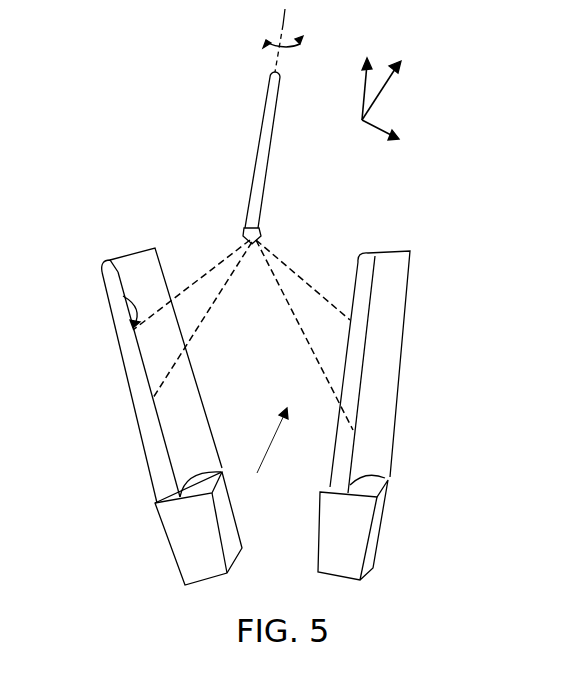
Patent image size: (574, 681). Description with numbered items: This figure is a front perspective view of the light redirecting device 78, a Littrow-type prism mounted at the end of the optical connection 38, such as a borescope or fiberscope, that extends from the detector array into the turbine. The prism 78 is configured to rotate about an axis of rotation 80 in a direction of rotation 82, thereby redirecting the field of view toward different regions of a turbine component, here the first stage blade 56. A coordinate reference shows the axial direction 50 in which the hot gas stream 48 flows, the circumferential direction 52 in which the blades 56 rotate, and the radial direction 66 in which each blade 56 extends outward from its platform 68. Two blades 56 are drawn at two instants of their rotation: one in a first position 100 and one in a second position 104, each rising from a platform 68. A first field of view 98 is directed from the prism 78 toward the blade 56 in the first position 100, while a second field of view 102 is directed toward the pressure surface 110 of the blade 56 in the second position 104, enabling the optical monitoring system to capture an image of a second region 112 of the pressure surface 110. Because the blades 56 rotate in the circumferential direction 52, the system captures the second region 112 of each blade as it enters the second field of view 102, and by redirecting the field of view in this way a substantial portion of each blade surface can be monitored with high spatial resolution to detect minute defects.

The optical connection 38 is at (273, 153).
The hot gas stream 48 is at (272, 438).
The axial direction 50 is at (398, 100).
The circumferential direction 52 is at (366, 130).
The first stage blade 56 is at (162, 452).
The radial direction 66 is at (362, 92).
The platform 68 is at (327, 485).
The light redirecting device 78 is at (262, 228).
The axis of rotation 80 is at (285, 22).
The direction of rotation 82 is at (298, 60).
The first field of view 98 is at (300, 337).
The first position 100 is at (376, 233).
The second field of view 102 is at (200, 270).
The second position 104 is at (132, 329).
The pressure surface 110 is at (143, 270).
The second region 112 is at (100, 290).